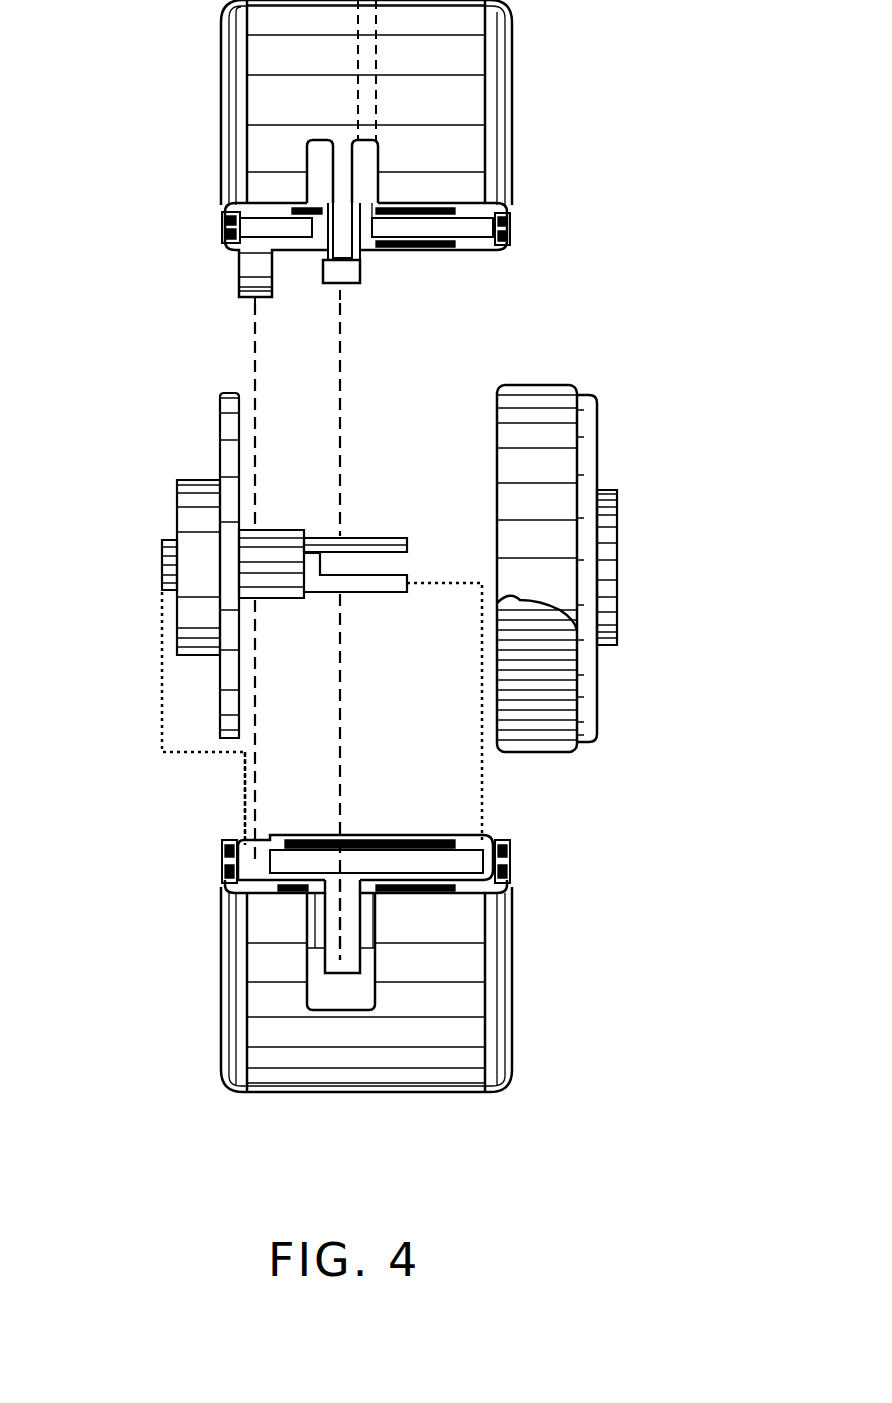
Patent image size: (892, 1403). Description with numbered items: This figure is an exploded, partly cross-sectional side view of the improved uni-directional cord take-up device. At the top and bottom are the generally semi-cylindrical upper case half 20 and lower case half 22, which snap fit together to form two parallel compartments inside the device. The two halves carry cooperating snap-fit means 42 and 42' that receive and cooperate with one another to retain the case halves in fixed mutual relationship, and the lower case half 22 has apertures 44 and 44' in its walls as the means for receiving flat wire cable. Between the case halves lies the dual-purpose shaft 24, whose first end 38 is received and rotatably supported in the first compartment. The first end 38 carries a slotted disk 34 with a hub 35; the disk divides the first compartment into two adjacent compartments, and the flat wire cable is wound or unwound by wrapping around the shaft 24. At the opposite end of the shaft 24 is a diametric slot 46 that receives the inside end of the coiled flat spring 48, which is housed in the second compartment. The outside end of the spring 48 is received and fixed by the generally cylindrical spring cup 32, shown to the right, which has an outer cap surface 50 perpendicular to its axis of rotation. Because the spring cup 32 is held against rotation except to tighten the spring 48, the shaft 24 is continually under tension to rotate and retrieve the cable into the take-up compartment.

The upper case half 20 is at (524, 62).
The lower case half 22 is at (521, 1033).
The dual-purpose shaft 24 is at (266, 565).
The spring cup 32 is at (523, 568).
The slotted disk 34 is at (232, 433).
The hub 35 is at (185, 631).
The first end 38 is at (150, 566).
The snap-fit means 42 is at (360, 246).
The snap-fit means 42' is at (370, 856).
The aperture 44 is at (279, 807).
The aperture 44' is at (382, 903).
The diametric slot 46 is at (385, 572).
The flat coil spring 48 is at (497, 705).
The outer cap surface 50 is at (580, 682).